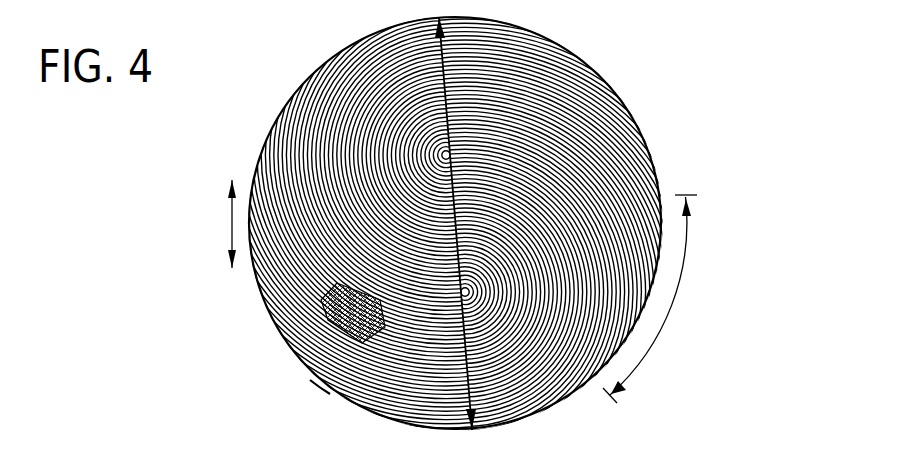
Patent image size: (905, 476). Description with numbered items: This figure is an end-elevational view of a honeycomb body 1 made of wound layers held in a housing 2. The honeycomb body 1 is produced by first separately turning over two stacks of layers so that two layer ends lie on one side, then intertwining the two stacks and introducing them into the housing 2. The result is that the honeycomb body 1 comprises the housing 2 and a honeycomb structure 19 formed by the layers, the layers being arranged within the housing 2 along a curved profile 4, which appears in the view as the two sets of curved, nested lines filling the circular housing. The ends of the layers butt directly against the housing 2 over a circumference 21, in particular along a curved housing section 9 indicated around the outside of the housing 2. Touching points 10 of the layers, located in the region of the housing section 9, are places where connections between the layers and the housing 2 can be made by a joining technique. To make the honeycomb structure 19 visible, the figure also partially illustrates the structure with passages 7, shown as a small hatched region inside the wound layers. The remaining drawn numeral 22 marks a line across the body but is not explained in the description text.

The honeycomb body 1 is at (182, 165).
The housing 2 is at (267, 142).
The curved profile 4 is at (594, 124).
The passages 7 is at (323, 313).
The curved housing section 9 is at (672, 312).
The touching points 10 is at (320, 378).
The honeycomb structure 19 is at (337, 80).
The circumference 21 is at (232, 220).
The diameter line 22 is at (482, 390).